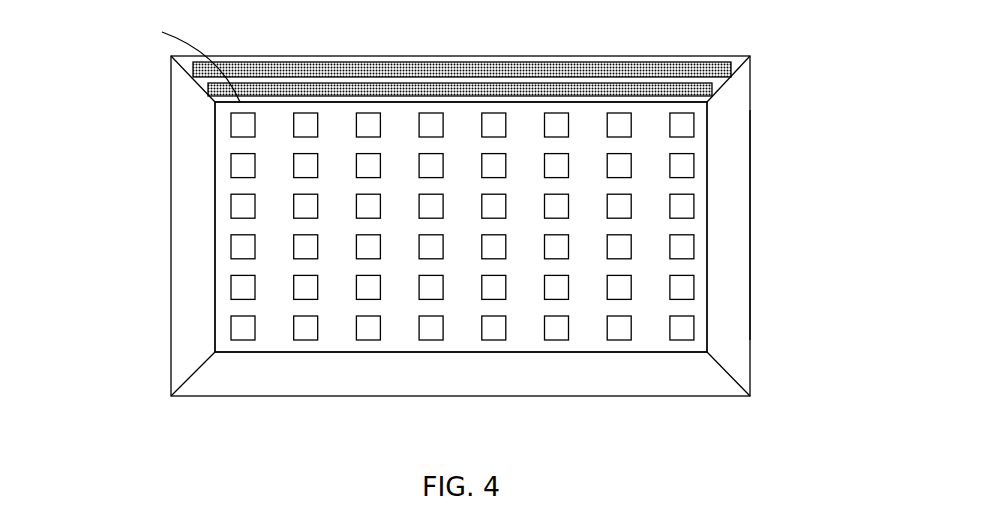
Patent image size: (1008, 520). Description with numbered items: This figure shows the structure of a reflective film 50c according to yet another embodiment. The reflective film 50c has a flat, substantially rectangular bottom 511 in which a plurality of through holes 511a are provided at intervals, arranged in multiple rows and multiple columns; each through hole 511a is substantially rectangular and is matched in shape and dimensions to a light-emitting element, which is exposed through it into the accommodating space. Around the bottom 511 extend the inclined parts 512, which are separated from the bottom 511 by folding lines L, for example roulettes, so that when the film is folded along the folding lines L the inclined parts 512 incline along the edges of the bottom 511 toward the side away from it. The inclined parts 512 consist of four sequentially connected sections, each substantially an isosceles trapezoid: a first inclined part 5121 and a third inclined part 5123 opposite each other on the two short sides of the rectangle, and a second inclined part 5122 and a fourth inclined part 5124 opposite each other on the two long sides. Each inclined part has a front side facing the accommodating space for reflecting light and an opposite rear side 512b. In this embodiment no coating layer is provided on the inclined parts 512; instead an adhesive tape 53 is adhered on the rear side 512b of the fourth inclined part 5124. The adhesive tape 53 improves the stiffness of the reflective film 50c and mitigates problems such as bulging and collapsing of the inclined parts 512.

The reflective film 50c is at (488, 36).
The inclined parts 512 is at (460, 233).
The first inclined part 5121 is at (752, 107).
The second inclined part 5122 is at (405, 396).
The third inclined part 5123 is at (171, 238).
The fourth inclined part 5124 is at (632, 56).
The rear side 512b is at (742, 225).
The bottom 511 is at (697, 150).
The through holes 511a is at (690, 171).
The adhesive tape 53 is at (210, 88).
The folding lines L is at (191, 55).